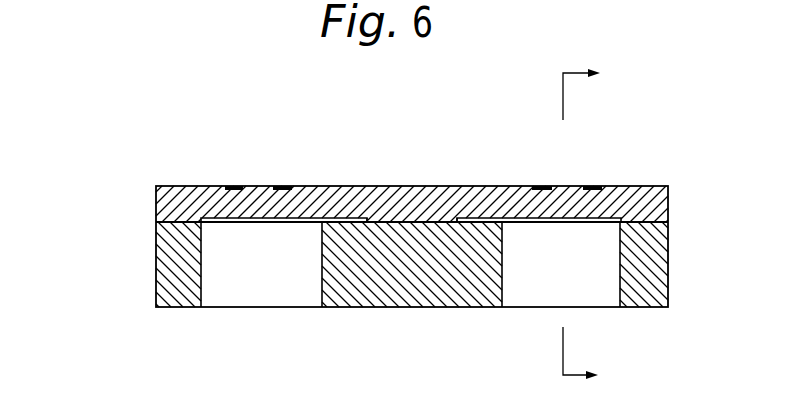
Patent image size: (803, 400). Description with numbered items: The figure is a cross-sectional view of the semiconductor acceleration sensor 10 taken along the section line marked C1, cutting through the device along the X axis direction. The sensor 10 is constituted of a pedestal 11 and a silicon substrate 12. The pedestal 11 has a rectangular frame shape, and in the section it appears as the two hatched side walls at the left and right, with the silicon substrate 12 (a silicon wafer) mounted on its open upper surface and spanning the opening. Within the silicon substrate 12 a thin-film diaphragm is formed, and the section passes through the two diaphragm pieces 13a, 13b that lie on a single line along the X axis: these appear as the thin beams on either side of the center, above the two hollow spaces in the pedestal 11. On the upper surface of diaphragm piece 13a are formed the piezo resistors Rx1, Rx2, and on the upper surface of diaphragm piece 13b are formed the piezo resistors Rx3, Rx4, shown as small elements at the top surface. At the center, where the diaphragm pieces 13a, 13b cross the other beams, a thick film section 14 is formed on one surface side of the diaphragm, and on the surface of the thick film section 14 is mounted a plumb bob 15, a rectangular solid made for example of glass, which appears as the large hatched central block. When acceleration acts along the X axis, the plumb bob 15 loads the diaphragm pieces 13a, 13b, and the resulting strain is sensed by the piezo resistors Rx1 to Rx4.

The semiconductor acceleration sensor 10 is at (124, 146).
The pedestal 11 is at (165, 265).
The silicon substrate 12 is at (190, 186).
The diaphragm piece 13a is at (493, 186).
The diaphragm piece 13b is at (310, 186).
The thick film section 14 is at (397, 207).
The plumb bob 15 is at (380, 290).
The piezo resistor Rx1 is at (590, 186).
The piezo resistor Rx2 is at (541, 186).
The piezo resistor Rx3 is at (283, 186).
The piezo resistor Rx4 is at (233, 186).
The section line C1 is at (595, 226).